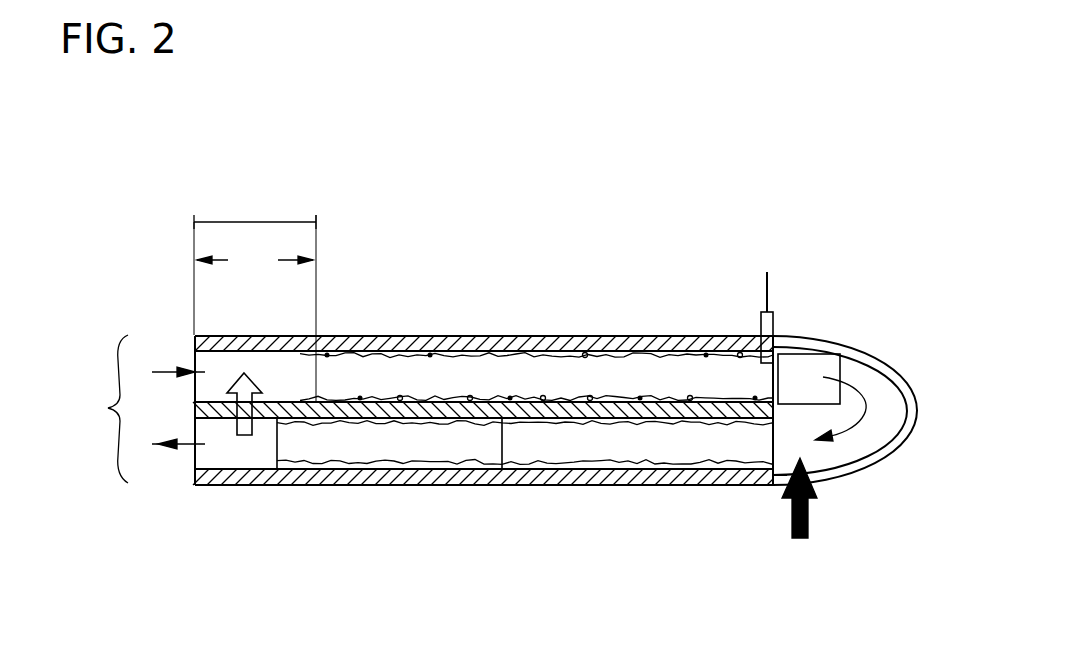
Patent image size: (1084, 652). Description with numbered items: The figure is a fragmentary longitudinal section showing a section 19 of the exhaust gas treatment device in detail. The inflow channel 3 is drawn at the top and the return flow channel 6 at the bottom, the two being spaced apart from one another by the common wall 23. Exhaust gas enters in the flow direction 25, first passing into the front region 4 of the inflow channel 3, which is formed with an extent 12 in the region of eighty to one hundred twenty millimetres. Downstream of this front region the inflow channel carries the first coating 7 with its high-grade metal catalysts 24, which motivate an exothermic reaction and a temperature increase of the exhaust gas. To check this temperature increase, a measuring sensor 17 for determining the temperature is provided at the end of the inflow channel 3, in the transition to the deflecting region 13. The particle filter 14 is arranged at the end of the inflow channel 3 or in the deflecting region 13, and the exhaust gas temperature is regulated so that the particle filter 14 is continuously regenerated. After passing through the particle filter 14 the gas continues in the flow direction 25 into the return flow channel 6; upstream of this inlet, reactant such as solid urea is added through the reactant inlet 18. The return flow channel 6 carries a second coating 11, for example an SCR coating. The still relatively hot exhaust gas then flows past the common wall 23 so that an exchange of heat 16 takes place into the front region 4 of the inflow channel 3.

The inflow channel 3 is at (628, 382).
The front region 4 is at (250, 222).
The return flow channel 6 is at (680, 447).
The first coating 7 is at (370, 350).
The second coating 11 is at (313, 470).
The extent 12 is at (255, 308).
The deflecting region 13 is at (853, 447).
The particle filter 14 is at (805, 368).
The exchange of heat 16 is at (245, 437).
The measuring sensor 17 is at (762, 312).
The reactant inlet 18 is at (808, 535).
The section 19 is at (129, 409).
The common wall 23 is at (550, 420).
The high-grade metal catalysts 24 is at (430, 352).
The flow direction 25 is at (880, 405).